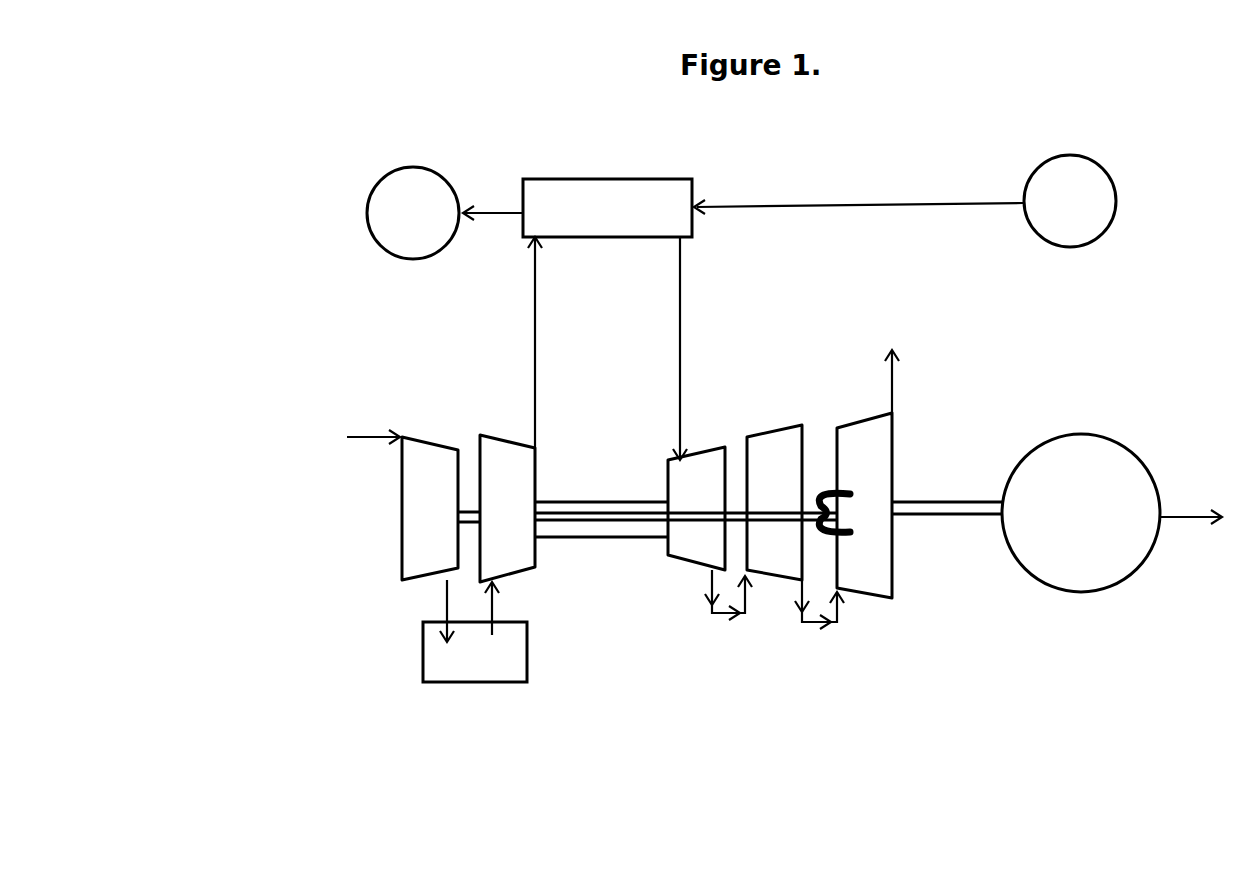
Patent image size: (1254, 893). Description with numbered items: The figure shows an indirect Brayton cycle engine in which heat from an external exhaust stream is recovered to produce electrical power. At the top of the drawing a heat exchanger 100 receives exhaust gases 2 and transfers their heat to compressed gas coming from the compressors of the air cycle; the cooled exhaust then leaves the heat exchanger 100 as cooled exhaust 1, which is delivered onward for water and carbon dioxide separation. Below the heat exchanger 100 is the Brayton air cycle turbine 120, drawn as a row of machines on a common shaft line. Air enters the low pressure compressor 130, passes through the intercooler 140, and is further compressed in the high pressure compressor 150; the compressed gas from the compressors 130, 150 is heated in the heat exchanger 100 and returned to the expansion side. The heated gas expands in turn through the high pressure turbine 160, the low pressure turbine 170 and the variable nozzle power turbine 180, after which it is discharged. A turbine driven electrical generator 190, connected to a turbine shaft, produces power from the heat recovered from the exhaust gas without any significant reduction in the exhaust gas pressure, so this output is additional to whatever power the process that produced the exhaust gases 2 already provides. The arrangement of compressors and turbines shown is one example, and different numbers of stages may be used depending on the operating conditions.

The cooled exhaust 1 is at (413, 213).
The exhaust gases 2 is at (1070, 201).
The heat exchanger 100 is at (562, 187).
The Brayton air cycle turbine 120 is at (247, 328).
The low pressure compressor 130 is at (412, 558).
The intercooler 140 is at (443, 670).
The high pressure compressor 150 is at (515, 537).
The high pressure turbine 160 is at (702, 545).
The low pressure turbine 170 is at (785, 568).
The variable nozzle power turbine 180 is at (868, 567).
The turbine driven electrical generator 190 is at (1067, 528).